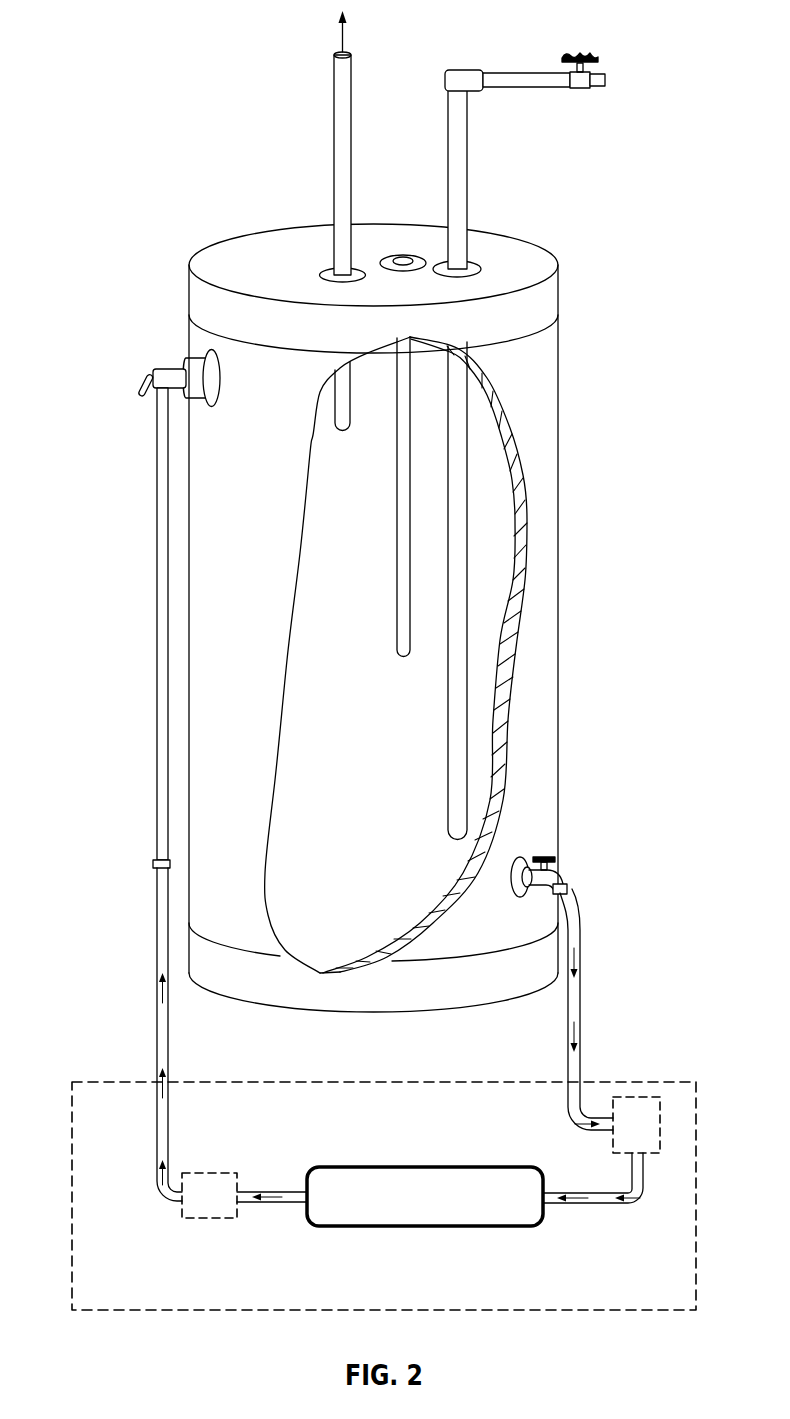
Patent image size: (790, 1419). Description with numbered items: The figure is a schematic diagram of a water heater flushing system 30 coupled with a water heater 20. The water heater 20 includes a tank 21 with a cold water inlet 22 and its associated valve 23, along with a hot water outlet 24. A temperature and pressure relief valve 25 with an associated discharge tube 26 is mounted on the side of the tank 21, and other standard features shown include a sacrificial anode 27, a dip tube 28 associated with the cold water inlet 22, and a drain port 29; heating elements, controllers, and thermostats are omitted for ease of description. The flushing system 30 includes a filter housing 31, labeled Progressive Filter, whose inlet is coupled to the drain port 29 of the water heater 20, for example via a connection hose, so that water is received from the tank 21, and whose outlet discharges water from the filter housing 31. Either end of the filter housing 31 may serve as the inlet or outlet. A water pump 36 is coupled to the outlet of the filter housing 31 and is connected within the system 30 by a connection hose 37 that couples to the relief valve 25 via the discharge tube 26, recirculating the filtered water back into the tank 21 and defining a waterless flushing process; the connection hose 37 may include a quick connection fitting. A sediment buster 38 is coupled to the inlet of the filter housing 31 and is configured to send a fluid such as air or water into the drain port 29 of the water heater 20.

The water heater 20 is at (116, 196).
The tank 21 is at (547, 360).
The cold water inlet 22 is at (618, 76).
The valve 23 is at (586, 102).
The hot water outlet 24 is at (318, 154).
The temperature and pressure relief (TPR) valve 25 is at (116, 380).
The discharge tube 26 is at (146, 766).
The sacrificial anode 27 is at (385, 484).
The dip tube 28 is at (480, 616).
The drain port 29 is at (572, 870).
The water heater flushing system 30 is at (88, 1074).
The filter housing 31 is at (522, 1228).
The water pump 36 is at (200, 1219).
The connection hose 37 is at (160, 1153).
The sediment buster 38 is at (647, 1097).